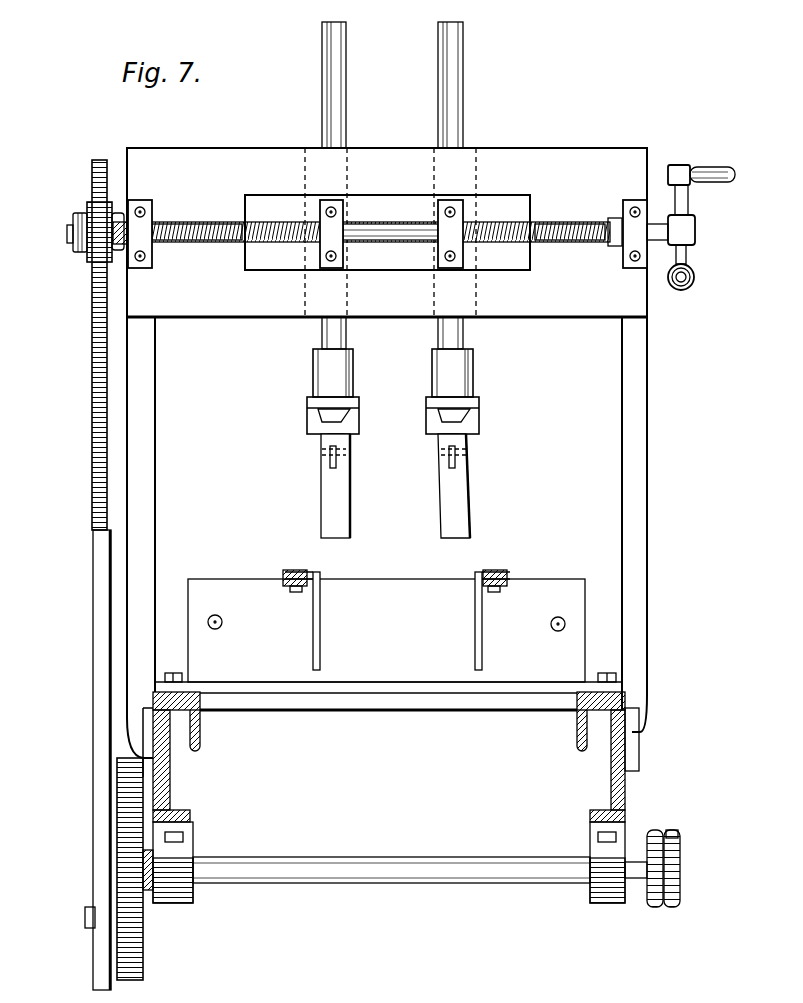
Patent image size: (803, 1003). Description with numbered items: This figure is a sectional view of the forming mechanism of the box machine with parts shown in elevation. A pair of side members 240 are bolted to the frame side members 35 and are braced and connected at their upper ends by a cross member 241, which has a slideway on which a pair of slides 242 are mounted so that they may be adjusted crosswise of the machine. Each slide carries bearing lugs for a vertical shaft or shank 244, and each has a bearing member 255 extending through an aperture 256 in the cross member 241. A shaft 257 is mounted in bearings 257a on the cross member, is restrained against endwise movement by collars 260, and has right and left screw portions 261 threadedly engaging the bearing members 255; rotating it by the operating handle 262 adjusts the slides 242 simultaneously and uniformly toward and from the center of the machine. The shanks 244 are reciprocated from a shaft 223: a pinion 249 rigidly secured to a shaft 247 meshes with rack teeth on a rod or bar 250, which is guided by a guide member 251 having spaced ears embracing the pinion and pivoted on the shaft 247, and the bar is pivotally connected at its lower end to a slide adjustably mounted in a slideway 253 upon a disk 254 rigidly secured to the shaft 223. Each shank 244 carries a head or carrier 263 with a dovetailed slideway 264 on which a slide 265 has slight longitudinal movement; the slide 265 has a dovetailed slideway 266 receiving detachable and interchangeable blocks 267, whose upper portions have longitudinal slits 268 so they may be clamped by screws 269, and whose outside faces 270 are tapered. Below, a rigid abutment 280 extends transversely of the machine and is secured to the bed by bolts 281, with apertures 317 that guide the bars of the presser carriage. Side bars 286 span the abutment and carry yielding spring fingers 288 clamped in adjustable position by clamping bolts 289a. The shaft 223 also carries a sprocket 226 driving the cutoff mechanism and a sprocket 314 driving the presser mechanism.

The cross member 241 is at (578, 148).
The side members 240 is at (156, 465).
The vertical shaft or shank 244 is at (440, 88).
The aperture 256 is at (272, 196).
The shaft 257 is at (232, 226).
The bearings 257a is at (150, 200).
The right and left screw portions 261 is at (226, 243).
The slides 242 is at (352, 211).
The bearing member 255 is at (433, 246).
The pinion 249 is at (90, 260).
The guide member 251 is at (78, 226).
The shaft 247 is at (70, 236).
The rod or bar 250 is at (92, 348).
The slideway 253 is at (106, 952).
The disk 254 is at (142, 978).
The collars 260 is at (612, 247).
The operating handle 262 is at (688, 192).
The head or carrier 263 is at (313, 402).
The dovetailed slideway 264 is at (440, 412).
The slide 265 is at (432, 423).
The dovetailed slideway 266 is at (440, 440).
The blocks 267 is at (442, 510).
The outside faces 270 is at (321, 505).
The longitudinal slits 268 is at (329, 458).
The screws 269 is at (465, 455).
The rigid abutment 280 is at (405, 683).
The yielding spring fingers 288 is at (321, 625).
The side bars 286 is at (281, 575).
The clamping bolts 289a is at (292, 592).
The apertures 317 is at (222, 626).
The bolts 281 is at (178, 673).
The side members 35 is at (171, 790).
The shaft 223 is at (446, 856).
The sprocket 226 is at (660, 908).
The sprocket 314 is at (676, 834).